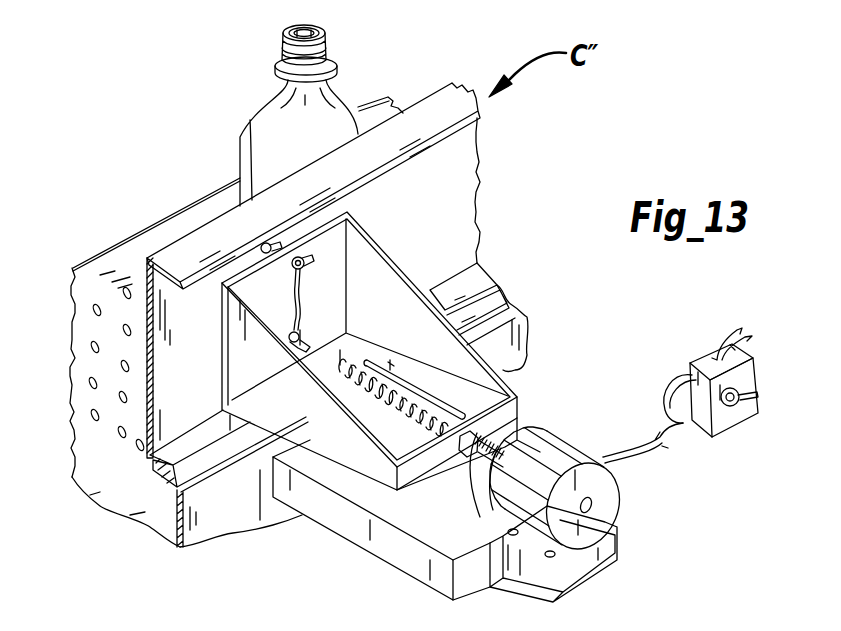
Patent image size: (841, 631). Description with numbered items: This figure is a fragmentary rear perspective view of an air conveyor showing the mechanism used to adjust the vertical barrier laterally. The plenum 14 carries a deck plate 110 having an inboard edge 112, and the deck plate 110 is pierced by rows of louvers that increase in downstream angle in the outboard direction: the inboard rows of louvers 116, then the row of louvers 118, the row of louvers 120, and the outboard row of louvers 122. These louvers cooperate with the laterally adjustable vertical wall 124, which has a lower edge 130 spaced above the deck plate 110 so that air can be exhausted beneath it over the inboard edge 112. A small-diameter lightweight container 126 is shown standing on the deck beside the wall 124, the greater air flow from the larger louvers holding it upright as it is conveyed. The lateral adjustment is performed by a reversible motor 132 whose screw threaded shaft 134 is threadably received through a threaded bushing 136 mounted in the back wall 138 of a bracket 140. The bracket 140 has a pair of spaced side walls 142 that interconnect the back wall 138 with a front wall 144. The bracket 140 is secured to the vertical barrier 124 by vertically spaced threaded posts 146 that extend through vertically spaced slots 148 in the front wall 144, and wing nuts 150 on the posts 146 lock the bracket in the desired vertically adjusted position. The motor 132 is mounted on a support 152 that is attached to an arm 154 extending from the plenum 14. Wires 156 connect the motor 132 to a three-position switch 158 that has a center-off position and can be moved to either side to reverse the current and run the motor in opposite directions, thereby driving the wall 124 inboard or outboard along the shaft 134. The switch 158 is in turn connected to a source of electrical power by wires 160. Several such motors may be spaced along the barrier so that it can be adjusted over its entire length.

The plenum 14 is at (85, 228).
The deck plate 110 is at (104, 262).
The inboard edge 112 is at (510, 302).
The louvers 116 is at (138, 446).
The louvers 118 is at (92, 382).
The louvers 120 is at (94, 346).
The louvers 122 is at (96, 309).
The vertical wall 124 is at (462, 143).
The container 126 is at (260, 108).
The lower edge 130 is at (478, 276).
The motor 132 is at (563, 447).
The screw threaded shaft 134 is at (478, 486).
The threaded bushing 136 is at (520, 405).
The back wall 138 is at (417, 480).
The bracket 140 is at (432, 218).
The side walls 142 is at (244, 377).
The front wall 144 is at (336, 238).
The threaded posts 146 is at (305, 262).
The slots 148 is at (285, 342).
The wing nuts 150 is at (293, 336).
The support 152 is at (570, 590).
The arm 154 is at (330, 515).
The wires 156 is at (688, 428).
The switch 158 is at (753, 377).
The wires 160 is at (735, 335).